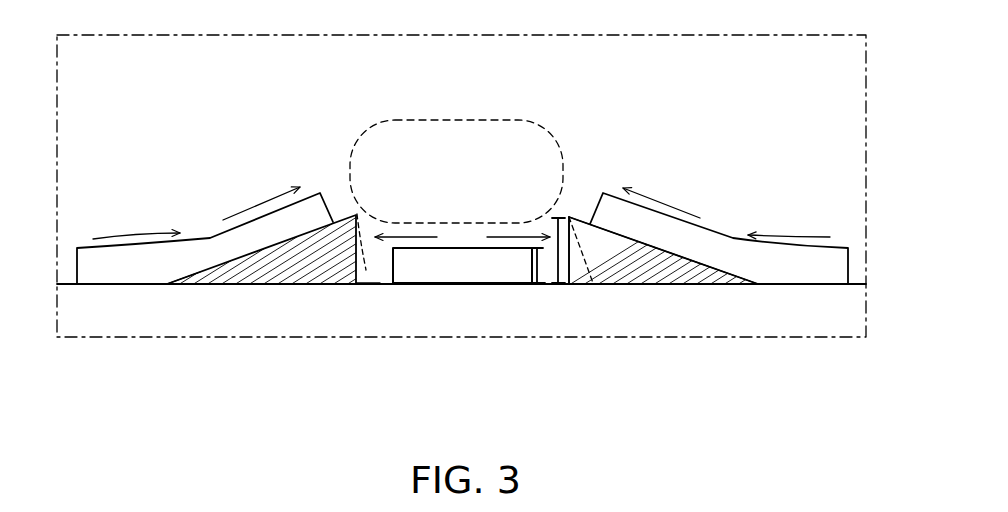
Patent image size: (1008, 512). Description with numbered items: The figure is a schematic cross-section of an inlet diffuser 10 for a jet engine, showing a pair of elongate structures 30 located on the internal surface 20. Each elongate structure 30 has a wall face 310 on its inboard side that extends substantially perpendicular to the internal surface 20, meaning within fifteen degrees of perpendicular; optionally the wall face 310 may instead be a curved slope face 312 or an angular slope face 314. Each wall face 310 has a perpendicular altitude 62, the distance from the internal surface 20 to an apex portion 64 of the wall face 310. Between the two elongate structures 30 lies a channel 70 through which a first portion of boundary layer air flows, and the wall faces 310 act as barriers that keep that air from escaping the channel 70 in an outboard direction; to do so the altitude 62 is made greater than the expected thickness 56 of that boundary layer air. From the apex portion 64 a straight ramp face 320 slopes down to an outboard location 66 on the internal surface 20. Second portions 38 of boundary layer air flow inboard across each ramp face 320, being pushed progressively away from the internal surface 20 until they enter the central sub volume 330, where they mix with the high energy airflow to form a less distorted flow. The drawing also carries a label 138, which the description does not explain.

The inlet diffuser 10 is at (749, 81).
The internal surface 20 is at (137, 285).
The elongate structure 30 is at (288, 285).
The second portion of boundary layer air 38 is at (212, 247).
The expected thickness 56 is at (503, 285).
The perpendicular altitude 62 is at (553, 219).
The apex portion 64 is at (568, 217).
The outboard location 66 is at (168, 285).
The channel 70 is at (463, 232).
The outer base corner of support 138 is at (758, 285).
The wall face 310 is at (371, 232).
The curved slope face 312 is at (366, 270).
The angular slope face 314 is at (570, 216).
The ramp face 320 is at (677, 256).
The central sub volume 330 is at (378, 166).